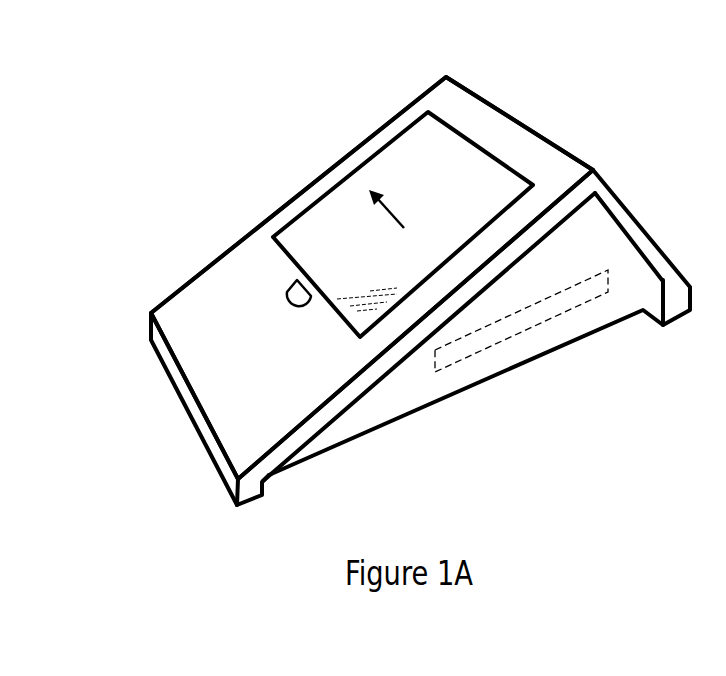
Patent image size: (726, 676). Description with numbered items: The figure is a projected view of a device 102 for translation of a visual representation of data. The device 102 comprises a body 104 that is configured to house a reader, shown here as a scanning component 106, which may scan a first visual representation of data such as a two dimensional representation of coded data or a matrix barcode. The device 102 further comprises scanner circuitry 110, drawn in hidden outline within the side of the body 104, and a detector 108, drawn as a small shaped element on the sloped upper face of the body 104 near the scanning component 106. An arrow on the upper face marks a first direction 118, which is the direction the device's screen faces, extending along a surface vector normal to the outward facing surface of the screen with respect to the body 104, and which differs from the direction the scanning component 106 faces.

The device 102 is at (537, 55).
The body 104 is at (445, 76).
The scanning component 106 is at (348, 208).
The detector 108 is at (283, 285).
The scanner circuitry 110 is at (505, 352).
The first direction 118 is at (393, 212).